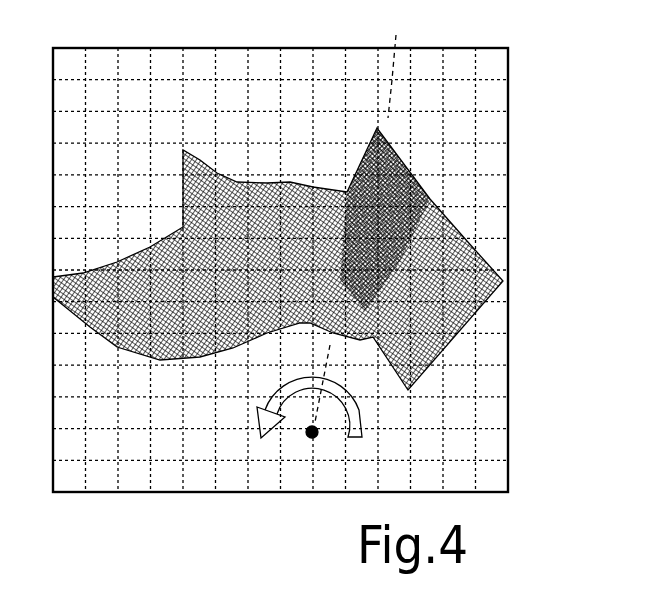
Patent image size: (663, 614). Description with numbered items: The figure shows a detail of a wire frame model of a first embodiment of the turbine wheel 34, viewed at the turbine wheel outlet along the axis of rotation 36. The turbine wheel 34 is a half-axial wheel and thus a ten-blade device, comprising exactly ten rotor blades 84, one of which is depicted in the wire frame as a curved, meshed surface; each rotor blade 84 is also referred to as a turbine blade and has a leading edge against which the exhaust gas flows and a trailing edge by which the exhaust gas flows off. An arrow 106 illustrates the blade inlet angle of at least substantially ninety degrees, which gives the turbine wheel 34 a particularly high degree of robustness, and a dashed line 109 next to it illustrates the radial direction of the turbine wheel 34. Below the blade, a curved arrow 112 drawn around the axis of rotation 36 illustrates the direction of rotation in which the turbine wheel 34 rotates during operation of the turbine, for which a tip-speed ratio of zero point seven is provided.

The rotor blade 84 is at (100, 267).
The turbine wheel 34 is at (473, 248).
The dashed line 109 is at (381, 68).
The arrow 106 is at (410, 66).
The arrow 112 is at (367, 408).
The axis of rotation 36 is at (306, 436).